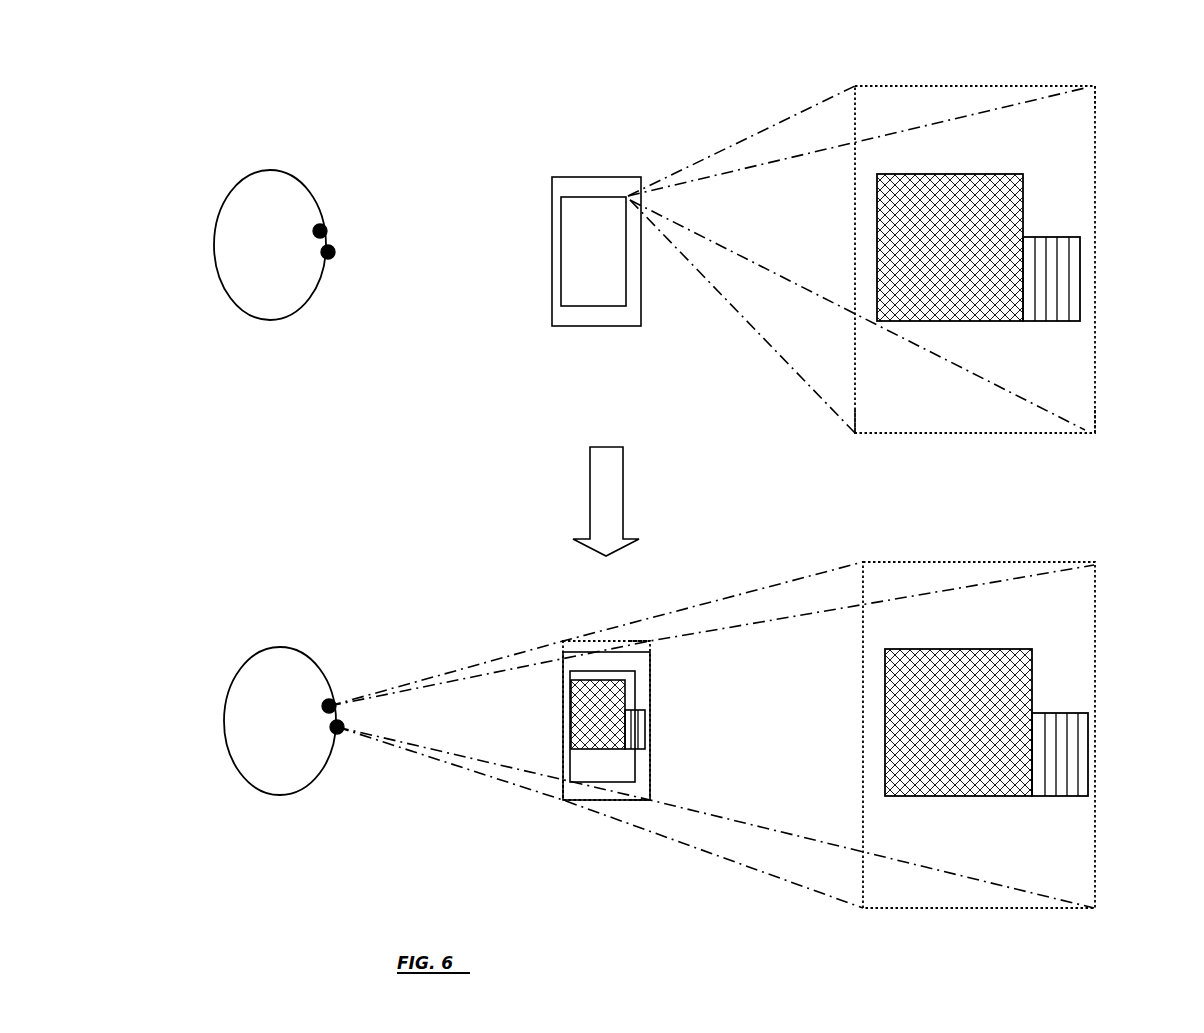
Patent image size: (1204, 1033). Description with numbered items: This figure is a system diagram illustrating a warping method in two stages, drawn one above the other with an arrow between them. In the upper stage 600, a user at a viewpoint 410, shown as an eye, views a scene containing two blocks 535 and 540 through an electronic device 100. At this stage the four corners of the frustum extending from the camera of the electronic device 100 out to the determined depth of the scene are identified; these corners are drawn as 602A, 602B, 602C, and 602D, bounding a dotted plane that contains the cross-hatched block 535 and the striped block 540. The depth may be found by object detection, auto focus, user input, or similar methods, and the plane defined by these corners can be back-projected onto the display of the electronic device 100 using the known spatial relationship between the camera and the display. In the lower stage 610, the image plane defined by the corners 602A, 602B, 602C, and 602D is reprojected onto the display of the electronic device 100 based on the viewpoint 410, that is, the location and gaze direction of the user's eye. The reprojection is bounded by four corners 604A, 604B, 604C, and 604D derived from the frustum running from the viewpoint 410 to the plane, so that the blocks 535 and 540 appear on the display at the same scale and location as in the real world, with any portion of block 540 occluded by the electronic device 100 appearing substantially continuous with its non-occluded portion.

The viewpoint 410 is at (241, 447).
The frustum identification stage 600 is at (325, 124).
The reprojection stage 610 is at (277, 545).
The electronic device 100 is at (616, 471).
The first corner of camera frustum 602A is at (921, 247).
The second corner of camera frustum 602B is at (1148, 85).
The third corner of camera frustum 602C is at (800, 440).
The fourth corner of camera frustum 602D is at (1149, 433).
The block 535 is at (801, 485).
The block 540 is at (898, 516).
The first corner of reprojection 604A is at (551, 708).
The second corner of reprojection 604B is at (697, 628).
The third corner of reprojection 604C is at (507, 808).
The fourth corner of reprojection 604D is at (698, 811).